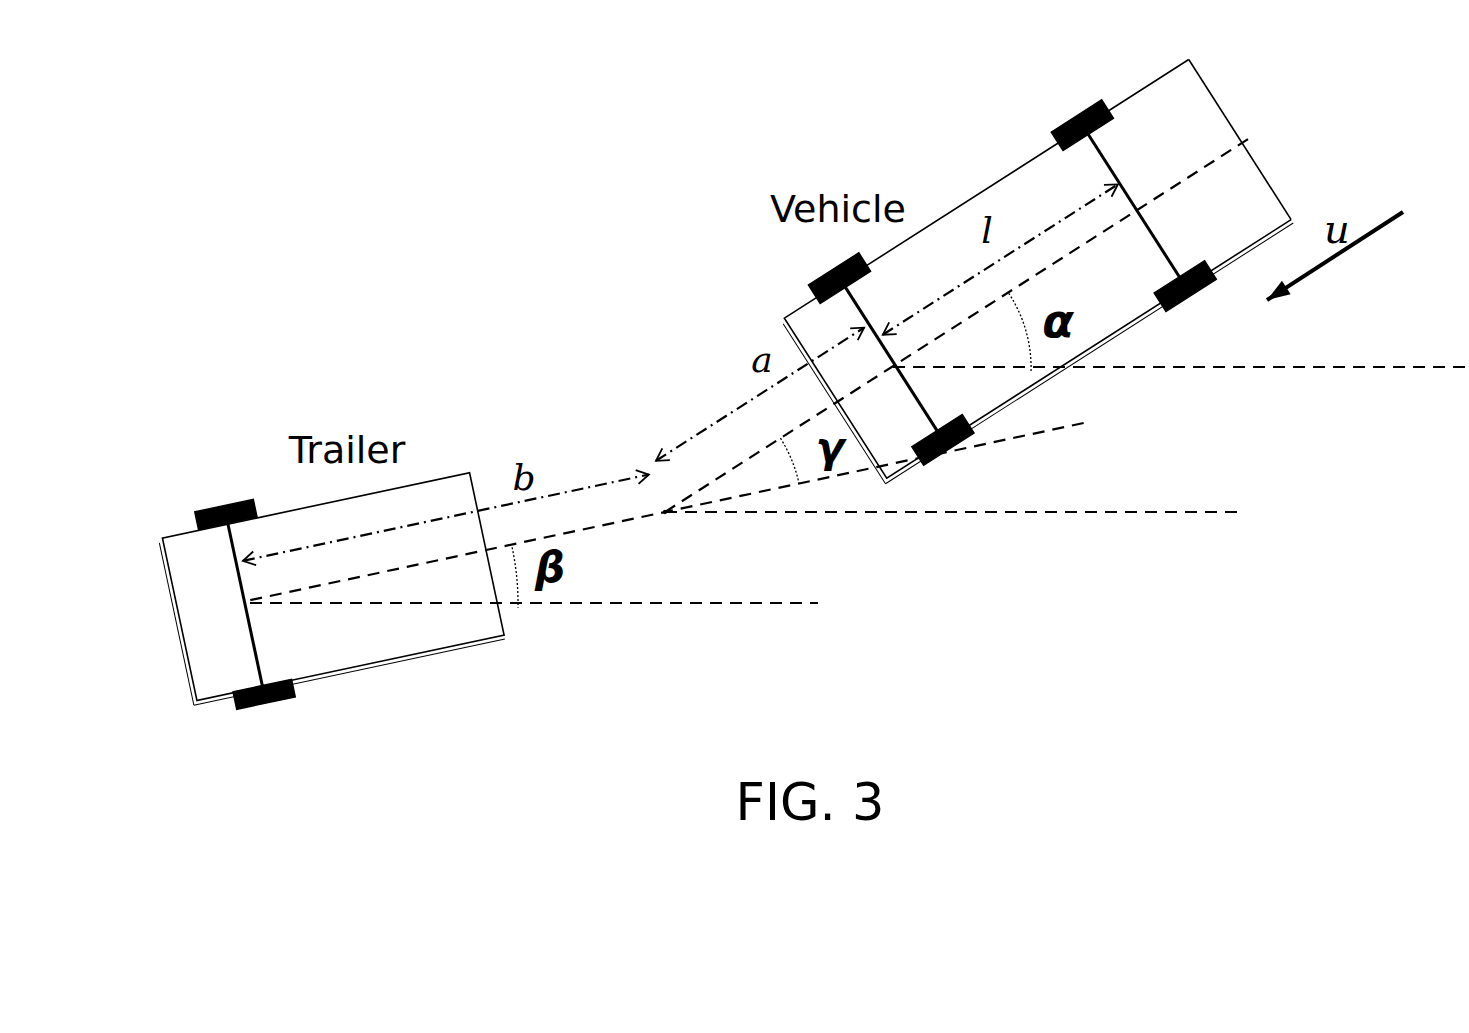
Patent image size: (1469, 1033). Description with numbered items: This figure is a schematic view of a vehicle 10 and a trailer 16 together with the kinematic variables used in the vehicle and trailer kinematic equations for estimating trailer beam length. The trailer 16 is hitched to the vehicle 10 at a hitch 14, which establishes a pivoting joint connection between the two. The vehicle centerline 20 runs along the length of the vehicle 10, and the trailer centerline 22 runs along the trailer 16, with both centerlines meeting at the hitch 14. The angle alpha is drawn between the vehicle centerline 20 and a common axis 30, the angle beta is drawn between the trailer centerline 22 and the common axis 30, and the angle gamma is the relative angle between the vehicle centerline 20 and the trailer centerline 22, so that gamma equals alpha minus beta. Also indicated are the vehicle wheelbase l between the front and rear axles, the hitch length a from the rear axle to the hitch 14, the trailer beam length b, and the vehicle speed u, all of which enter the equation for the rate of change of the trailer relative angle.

The vehicle 10 is at (1001, 298).
The hitch 14 is at (680, 527).
The trailer 16 is at (598, 547).
The vehicle centerline 20 is at (1278, 130).
The trailer centerline 22 is at (257, 592).
The common axis 30 is at (1328, 382).